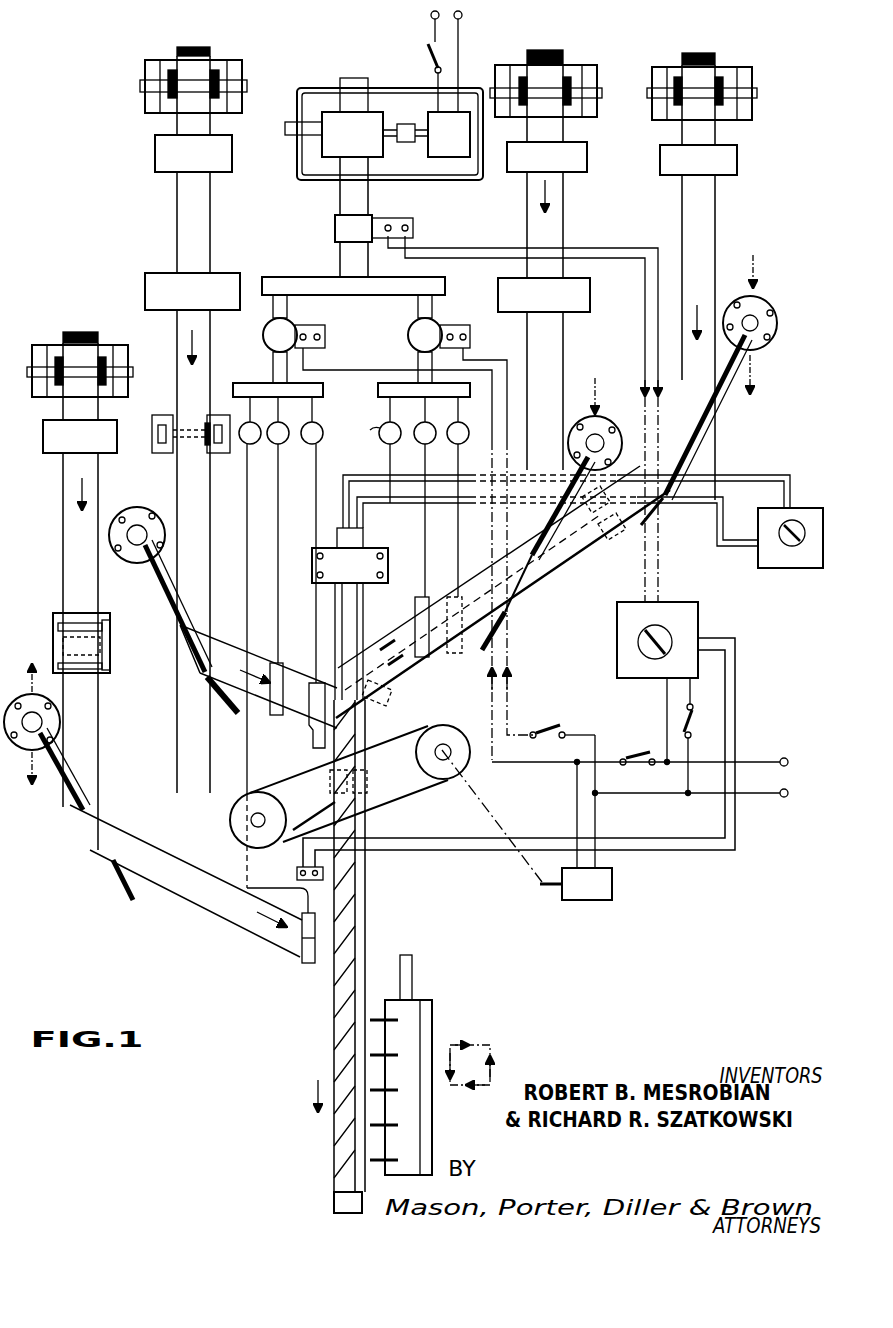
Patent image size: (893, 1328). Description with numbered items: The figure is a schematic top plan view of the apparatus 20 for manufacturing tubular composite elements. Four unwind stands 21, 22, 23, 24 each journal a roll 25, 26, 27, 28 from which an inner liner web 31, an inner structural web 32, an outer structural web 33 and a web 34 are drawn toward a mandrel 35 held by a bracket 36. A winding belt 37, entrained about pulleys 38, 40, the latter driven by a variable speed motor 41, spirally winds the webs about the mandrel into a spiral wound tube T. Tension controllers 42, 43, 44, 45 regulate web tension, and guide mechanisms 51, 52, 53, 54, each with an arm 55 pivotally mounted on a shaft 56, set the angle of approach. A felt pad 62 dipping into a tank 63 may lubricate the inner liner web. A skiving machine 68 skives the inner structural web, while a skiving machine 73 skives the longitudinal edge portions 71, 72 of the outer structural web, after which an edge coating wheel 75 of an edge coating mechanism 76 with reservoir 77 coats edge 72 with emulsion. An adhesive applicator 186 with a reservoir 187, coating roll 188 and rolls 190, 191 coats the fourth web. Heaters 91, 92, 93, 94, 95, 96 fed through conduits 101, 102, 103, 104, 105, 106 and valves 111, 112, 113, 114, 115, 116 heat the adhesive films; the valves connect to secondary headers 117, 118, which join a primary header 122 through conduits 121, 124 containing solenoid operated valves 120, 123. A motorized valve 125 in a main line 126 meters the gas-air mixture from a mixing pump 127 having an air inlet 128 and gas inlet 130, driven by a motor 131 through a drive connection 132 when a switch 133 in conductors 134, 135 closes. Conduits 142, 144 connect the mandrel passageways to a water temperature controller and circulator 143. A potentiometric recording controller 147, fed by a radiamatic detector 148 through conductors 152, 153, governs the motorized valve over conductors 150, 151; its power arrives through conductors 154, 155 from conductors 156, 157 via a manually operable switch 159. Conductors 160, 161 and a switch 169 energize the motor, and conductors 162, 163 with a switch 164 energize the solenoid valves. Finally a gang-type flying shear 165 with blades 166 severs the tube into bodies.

The apparatus 20 is at (82, 96).
The unwind stand 21 is at (753, 108).
The unwind stand 22 is at (596, 112).
The unwind stand 23 is at (240, 75).
The unwind stand 24 is at (32, 352).
The roll 25 is at (723, 57).
The roll 26 is at (564, 60).
The roll 27 is at (210, 54).
The roll 28 is at (96, 344).
The inner liner web 31 is at (698, 282).
The inner structural web 32 is at (532, 242).
The outer structural web 33 is at (183, 236).
The web 34 is at (80, 596).
The mandrel 35 is at (348, 641).
The bracket 36 is at (350, 565).
The winding belt 37 is at (396, 784).
The pulley 38 is at (238, 808).
The pulley 40 is at (448, 726).
The variable speed motor 41 is at (587, 884).
The tension controller 42 is at (698, 160).
The tension controller 43 is at (547, 157).
The tension controller 44 is at (193, 153).
The tension controller 45 is at (80, 436).
The guide mechanism 51 is at (776, 322).
The guide mechanism 52 is at (602, 422).
The guide mechanism 53 is at (144, 512).
The guide mechanism 54 is at (14, 694).
The arm 55 is at (162, 590).
The shaft 56 is at (750, 294).
The felt pad 62 is at (605, 497).
The reservoir or tank 63 is at (616, 540).
The skiving machine 68 is at (533, 307).
The longitudinal edge portion 71 is at (220, 642).
The longitudinal edge portion 72 is at (210, 680).
The skiving machine 73 is at (182, 306).
The edge coating wheel 75 is at (220, 456).
The edge coating mechanism 76 is at (160, 414).
The reservoir 77 is at (158, 452).
The heater 91 is at (414, 601).
The heater 92 is at (451, 592).
The heater 93 is at (275, 722).
The heater 94 is at (307, 966).
The heater 95 is at (388, 702).
The heater 96 is at (312, 748).
The conduit 101 is at (516, 467).
The conduit 102 is at (545, 478).
The conduit 103 is at (278, 502).
The conduit 104 is at (246, 534).
The conduit 105 is at (388, 470).
The conduit 106 is at (316, 490).
The valve 111 is at (393, 430).
The valve 112 is at (461, 430).
The valve 113 is at (281, 430).
The valve 114 is at (253, 430).
The valve 115 is at (353, 432).
The valve 116 is at (315, 430).
The secondary header 117 is at (428, 430).
The secondary header 118 is at (348, 376).
The solenoid operated valve 120 is at (437, 350).
The conduit 121 is at (431, 312).
The primary header 122 is at (353, 284).
The solenoid operated valve 123 is at (292, 350).
The conduit 124 is at (287, 312).
The motorized valve 125 is at (372, 228).
The main line or conduit 126 is at (342, 192).
The mixing pump 127 is at (340, 146).
The air inlet 128 is at (343, 78).
The gas inlet 130 is at (289, 142).
The motor 131 is at (460, 146).
The drive connection 132 is at (404, 124).
The switch 133 is at (427, 48).
The conductor 134 is at (427, 16).
The conductor 135 is at (458, 36).
The conduit 142 is at (708, 478).
The water temperature controller and circulator 143 is at (790, 538).
The conduit 144 is at (726, 518).
The potentiometric recording controller 147 is at (657, 638).
The low range radiamatic detector 148 is at (296, 872).
The conductor 150 is at (642, 288).
The conductor 151 is at (618, 240).
The conductor 152 is at (678, 862).
The conductor 153 is at (658, 834).
The conductor 154 is at (668, 700).
The conductor 155 is at (709, 704).
The conductor 156 is at (764, 760).
The conductor 157 is at (781, 800).
The manually operable switch 159 is at (695, 738).
The conductor 160 is at (570, 800).
The conductor 161 is at (606, 802).
The conductor 162 is at (368, 370).
The conductor 163 is at (504, 358).
The switch 164 is at (546, 732).
The gang-type flying shear 165 is at (433, 1018).
The severing blades 166 is at (399, 1070).
The switch 169 is at (626, 757).
The adhesive applicator 186 is at (49, 610).
The reservoir 187 is at (108, 674).
The coating roll 188 is at (104, 646).
The roll 190 is at (80, 620).
The roll 191 is at (68, 671).
The spiral wound tube T is at (335, 1032).